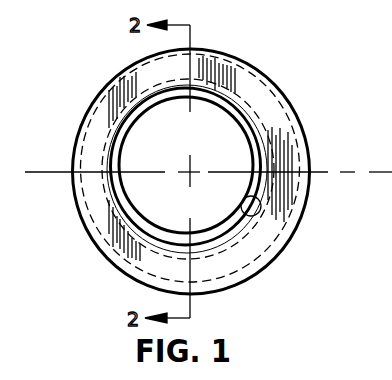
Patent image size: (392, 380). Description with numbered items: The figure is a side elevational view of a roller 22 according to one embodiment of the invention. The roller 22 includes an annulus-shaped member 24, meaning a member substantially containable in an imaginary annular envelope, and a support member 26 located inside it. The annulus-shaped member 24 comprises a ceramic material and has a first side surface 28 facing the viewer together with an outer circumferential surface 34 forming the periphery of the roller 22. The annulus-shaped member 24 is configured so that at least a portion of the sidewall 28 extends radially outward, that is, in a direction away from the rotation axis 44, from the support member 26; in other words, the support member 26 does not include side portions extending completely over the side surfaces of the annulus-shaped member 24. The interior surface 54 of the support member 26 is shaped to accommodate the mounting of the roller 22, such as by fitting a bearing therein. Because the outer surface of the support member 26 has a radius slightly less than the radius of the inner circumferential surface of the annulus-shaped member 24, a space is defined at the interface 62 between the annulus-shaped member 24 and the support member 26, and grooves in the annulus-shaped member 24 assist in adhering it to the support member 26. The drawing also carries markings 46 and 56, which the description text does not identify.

The roller 22 is at (113, 40).
The annulus-shaped member 24 is at (221, 72).
The support member 26 is at (223, 100).
The first side surface 28 is at (275, 109).
The outer circumferential surface 34 is at (298, 115).
The rotation axis 44 is at (190, 168).
The port 46 is at (253, 150).
The interior surface 54 is at (245, 195).
The passage 56 is at (196, 239).
The interface 62 is at (111, 216).